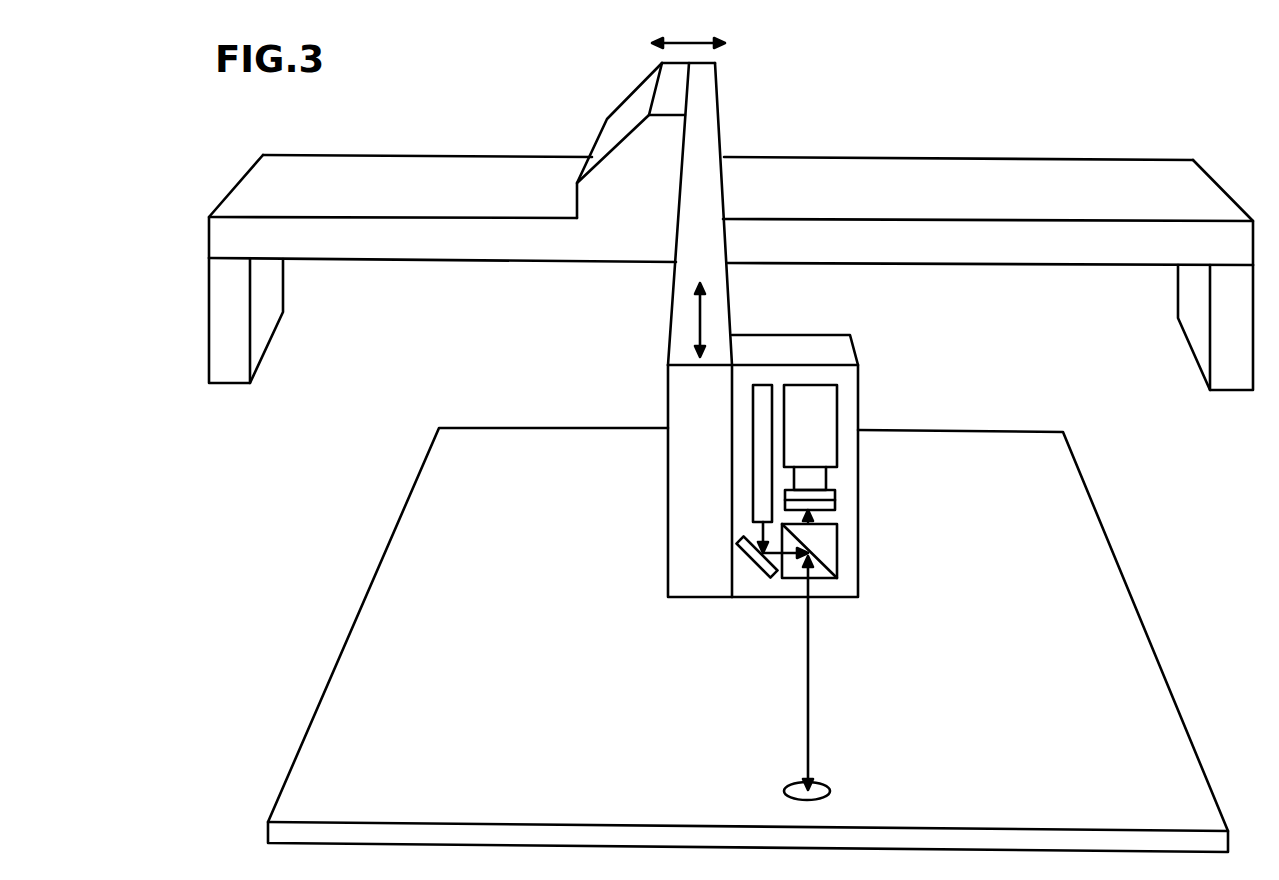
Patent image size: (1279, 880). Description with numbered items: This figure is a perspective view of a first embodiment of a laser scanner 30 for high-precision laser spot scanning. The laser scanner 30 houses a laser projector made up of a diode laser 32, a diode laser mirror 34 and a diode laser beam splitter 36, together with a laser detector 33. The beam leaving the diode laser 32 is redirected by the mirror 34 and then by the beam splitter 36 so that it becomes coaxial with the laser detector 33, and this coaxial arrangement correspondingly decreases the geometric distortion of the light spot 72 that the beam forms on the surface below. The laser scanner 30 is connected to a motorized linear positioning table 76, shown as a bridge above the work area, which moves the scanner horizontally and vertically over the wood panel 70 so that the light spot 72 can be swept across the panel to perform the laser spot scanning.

The laser scanner 30 is at (857, 350).
The diode laser 32 is at (763, 385).
The laser detector 33 is at (837, 445).
The diode laser mirror 34 is at (771, 597).
The diode laser beam splitter 36 is at (837, 555).
The wood panel 70 is at (528, 459).
The light spot 72 is at (830, 787).
The motorized linear positioning table 76 is at (530, 188).